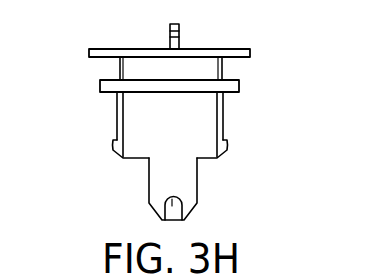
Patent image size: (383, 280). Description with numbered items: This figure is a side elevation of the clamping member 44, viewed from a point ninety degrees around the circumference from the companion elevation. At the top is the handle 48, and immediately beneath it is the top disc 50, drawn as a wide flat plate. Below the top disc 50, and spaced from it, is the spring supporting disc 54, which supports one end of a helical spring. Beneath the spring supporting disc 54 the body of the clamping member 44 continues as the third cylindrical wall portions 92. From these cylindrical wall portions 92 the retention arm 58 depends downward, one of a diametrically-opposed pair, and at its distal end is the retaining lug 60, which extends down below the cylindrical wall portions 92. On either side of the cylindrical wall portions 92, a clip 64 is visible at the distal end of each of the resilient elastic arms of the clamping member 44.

The clamping member 44 is at (362, 160).
The handle 48 is at (180, 30).
The top disc 50 is at (251, 53).
The spring supporting disc 54 is at (103, 86).
The third cylindrical wall portions 92 is at (185, 119).
The clip 64 is at (114, 146).
The retention arm 58 is at (172, 183).
The retaining lug 60 is at (168, 200).